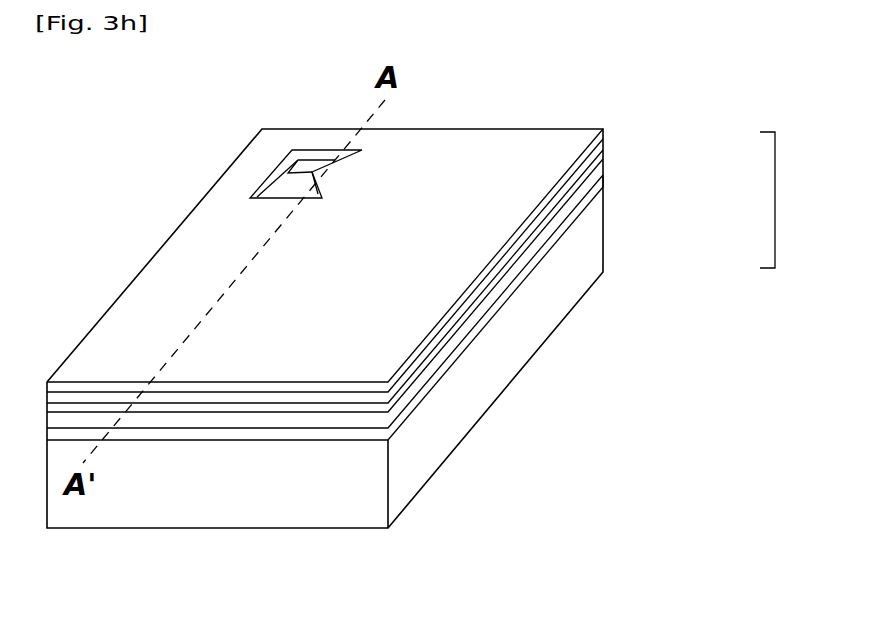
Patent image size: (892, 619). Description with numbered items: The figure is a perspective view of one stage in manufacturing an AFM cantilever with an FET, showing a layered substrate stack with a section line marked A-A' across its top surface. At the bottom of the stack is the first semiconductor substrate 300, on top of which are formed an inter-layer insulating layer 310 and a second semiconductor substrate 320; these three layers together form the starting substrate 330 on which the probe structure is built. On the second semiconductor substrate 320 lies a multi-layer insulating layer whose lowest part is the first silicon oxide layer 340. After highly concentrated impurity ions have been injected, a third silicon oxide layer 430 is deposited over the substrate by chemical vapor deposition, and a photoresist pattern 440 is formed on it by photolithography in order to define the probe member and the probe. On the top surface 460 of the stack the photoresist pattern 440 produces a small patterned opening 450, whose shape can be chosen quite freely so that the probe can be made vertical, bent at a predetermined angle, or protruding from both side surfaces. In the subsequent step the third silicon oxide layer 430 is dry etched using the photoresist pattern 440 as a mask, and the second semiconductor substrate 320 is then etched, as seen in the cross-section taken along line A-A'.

The first semiconductor substrate 300 is at (593, 257).
The inter-layer insulating layer 310 is at (604, 176).
The second semiconductor substrate 320 is at (606, 154).
The layer stack 330 is at (800, 200).
The first silicon oxide layer 340 is at (212, 407).
The third silicon oxide layer 430 is at (342, 392).
The photoresist pattern 440 is at (373, 386).
The opening pattern 450 is at (284, 183).
The top surface 460 is at (381, 178).